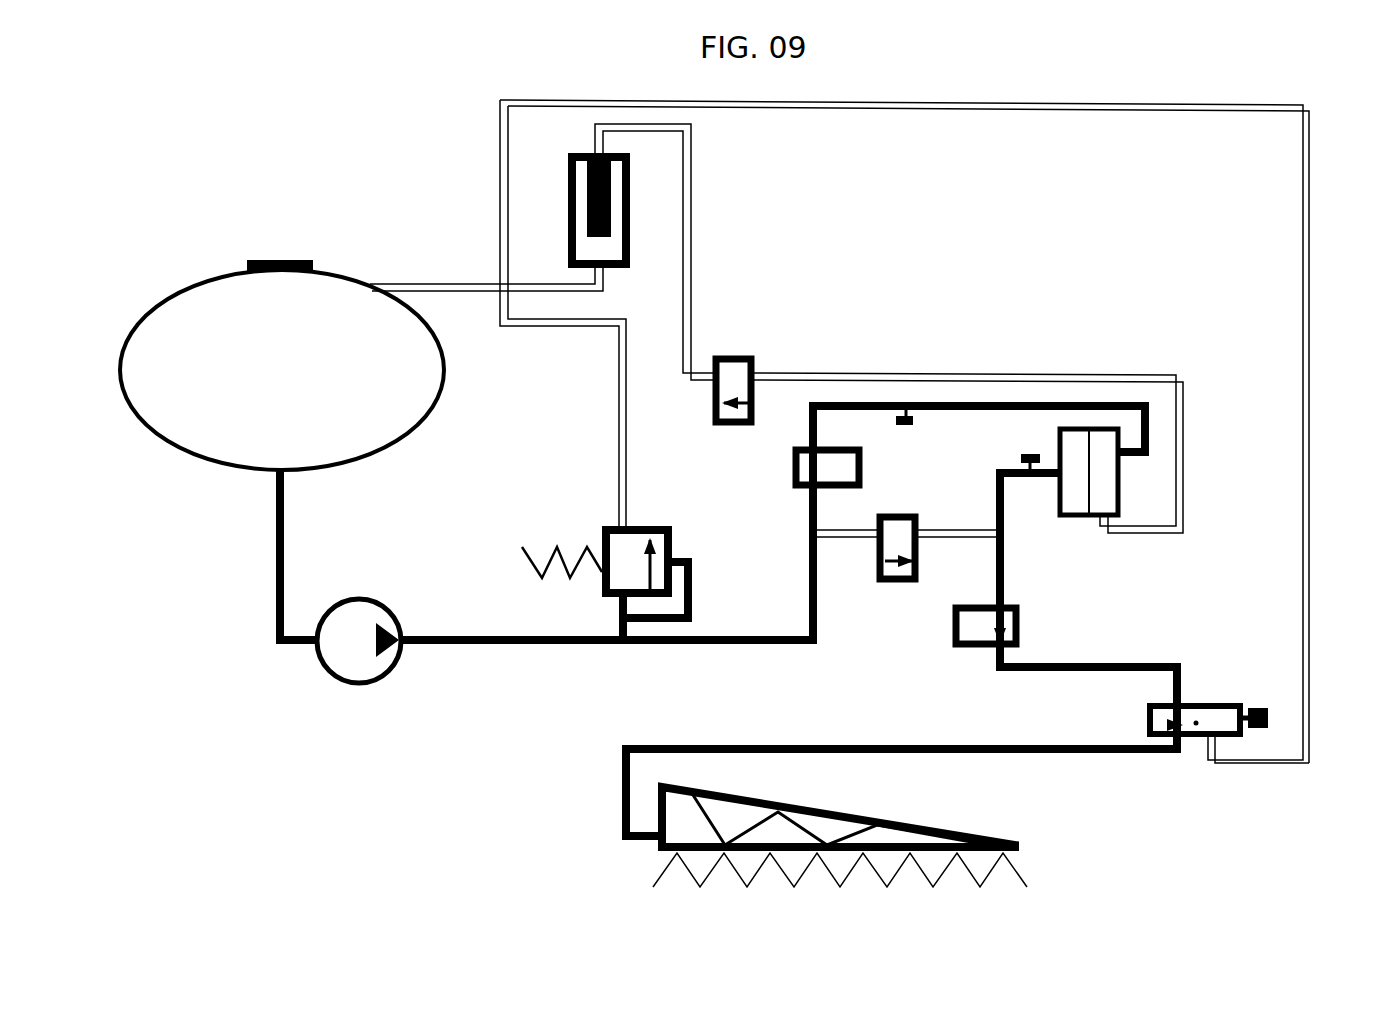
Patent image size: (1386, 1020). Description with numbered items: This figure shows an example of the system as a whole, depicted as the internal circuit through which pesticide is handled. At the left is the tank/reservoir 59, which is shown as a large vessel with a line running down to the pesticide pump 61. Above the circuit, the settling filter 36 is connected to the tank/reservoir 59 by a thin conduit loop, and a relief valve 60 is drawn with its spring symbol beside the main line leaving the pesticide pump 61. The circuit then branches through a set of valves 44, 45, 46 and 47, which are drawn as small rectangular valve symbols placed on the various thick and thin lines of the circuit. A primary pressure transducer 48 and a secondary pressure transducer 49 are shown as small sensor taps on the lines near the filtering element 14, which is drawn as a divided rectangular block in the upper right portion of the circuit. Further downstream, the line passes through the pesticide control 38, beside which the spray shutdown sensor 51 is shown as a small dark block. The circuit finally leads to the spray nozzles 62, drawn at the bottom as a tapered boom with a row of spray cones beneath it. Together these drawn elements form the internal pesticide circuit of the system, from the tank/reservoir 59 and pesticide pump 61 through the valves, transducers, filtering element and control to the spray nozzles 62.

The tank/reservoir 59 is at (188, 320).
The pesticide pump 61 is at (332, 683).
The relief valve 60 is at (607, 597).
The settling filter 36 is at (557, 196).
The valve 47 is at (741, 350).
The valve 44 is at (830, 440).
The primary pressure transducer 48 is at (910, 404).
The secondary pressure transducer 49 is at (1034, 448).
The filtering element 14 is at (1108, 418).
The valve 46 is at (917, 508).
The valve 45 is at (973, 652).
The pesticide control 38 is at (1196, 726).
The spray shutdown sensor 51 is at (1260, 700).
The spray nozzles 62 is at (656, 855).